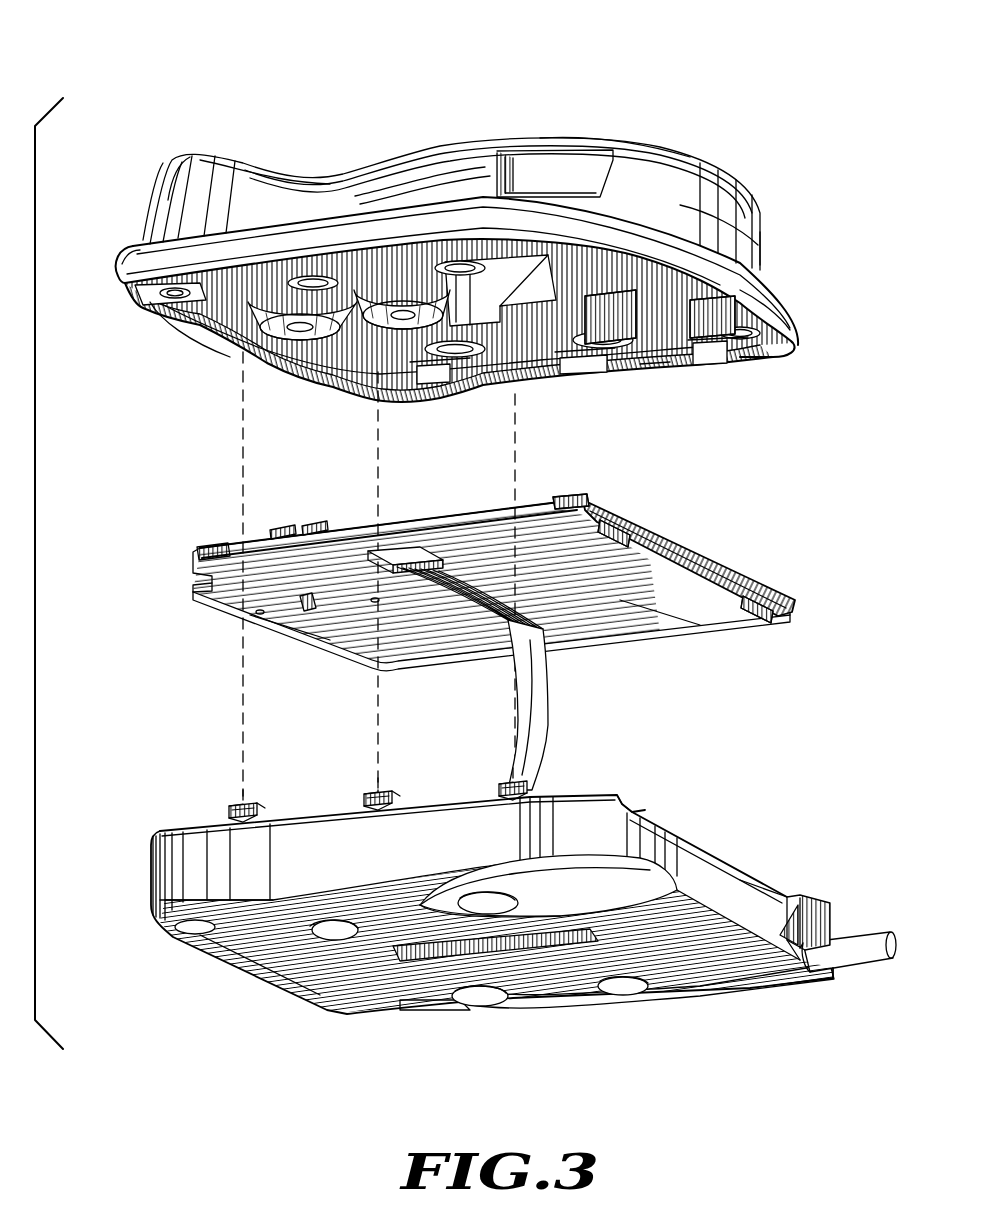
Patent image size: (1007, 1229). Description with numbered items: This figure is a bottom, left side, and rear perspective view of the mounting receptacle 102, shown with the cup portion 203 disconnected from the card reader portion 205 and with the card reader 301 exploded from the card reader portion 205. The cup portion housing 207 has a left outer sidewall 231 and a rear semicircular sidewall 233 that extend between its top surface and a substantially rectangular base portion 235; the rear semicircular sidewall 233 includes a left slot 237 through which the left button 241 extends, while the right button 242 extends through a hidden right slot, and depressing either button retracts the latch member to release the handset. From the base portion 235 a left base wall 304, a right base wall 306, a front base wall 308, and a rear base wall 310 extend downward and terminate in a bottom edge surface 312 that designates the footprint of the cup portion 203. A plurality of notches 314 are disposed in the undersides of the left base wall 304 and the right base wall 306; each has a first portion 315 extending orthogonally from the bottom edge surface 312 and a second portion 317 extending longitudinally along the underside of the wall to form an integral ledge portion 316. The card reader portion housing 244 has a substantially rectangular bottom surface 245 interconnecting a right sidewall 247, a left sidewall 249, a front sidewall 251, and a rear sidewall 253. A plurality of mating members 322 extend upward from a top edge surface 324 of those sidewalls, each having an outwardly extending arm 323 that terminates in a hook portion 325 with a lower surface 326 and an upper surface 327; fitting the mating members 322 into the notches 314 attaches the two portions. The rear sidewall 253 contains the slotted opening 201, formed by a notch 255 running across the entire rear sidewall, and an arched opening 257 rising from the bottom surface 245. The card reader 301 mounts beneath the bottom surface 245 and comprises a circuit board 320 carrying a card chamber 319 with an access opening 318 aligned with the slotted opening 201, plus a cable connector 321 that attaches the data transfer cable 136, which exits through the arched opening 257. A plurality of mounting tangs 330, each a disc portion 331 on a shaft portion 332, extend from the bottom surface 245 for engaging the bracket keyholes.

The mounting receptacle 102 is at (35, 568).
The data transfer cable 136 is at (550, 668).
The slotted opening 201 is at (772, 896).
The cup portion 203 is at (210, 106).
The card reader portion 205 is at (136, 845).
The cup portion housing 207 is at (172, 196).
The left outer sidewall 231 is at (270, 196).
The rear semicircular sidewall 233 is at (710, 190).
The substantially rectangular base portion 235 is at (128, 264).
The left slot 237 is at (592, 168).
The left button 241 is at (553, 153).
The right button 242 is at (772, 262).
The card reader portion housing 244 is at (636, 813).
The substantially rectangular bottom surface 245 is at (290, 978).
The right sidewall 247 is at (830, 912).
The left sidewall 249 is at (290, 851).
The front sidewall 251 is at (196, 940).
The rear sidewall 253 is at (800, 886).
The notch 255 is at (670, 812).
The arched opening 257 is at (836, 940).
The card reader 301 is at (635, 502).
The left base wall 304 is at (395, 235).
The right base wall 306 is at (652, 364).
The front base wall 308 is at (172, 320).
The rear base wall 310 is at (776, 302).
The bottom edge surface 312 is at (162, 296).
The plurality of notches 314 is at (302, 278).
The first portion 315 is at (748, 372).
The integral ledge portion 316 is at (438, 374).
The second portion 317 is at (428, 370).
The access opening 318 is at (700, 546).
The card chamber 319 is at (396, 516).
The circuit board 320 is at (218, 540).
The cable connector 321 is at (370, 553).
The plurality of mating members 322 is at (222, 760).
The outwardly extending arm 323 is at (250, 802).
The top edge surface 324 is at (270, 782).
The hook portion 325 is at (230, 806).
The lower surface 326 is at (522, 797).
The upper surface 327 is at (234, 804).
The plurality of mounting tangs 330 is at (452, 870).
The disc portion 331 is at (582, 910).
The shaft portion 332 is at (502, 900).